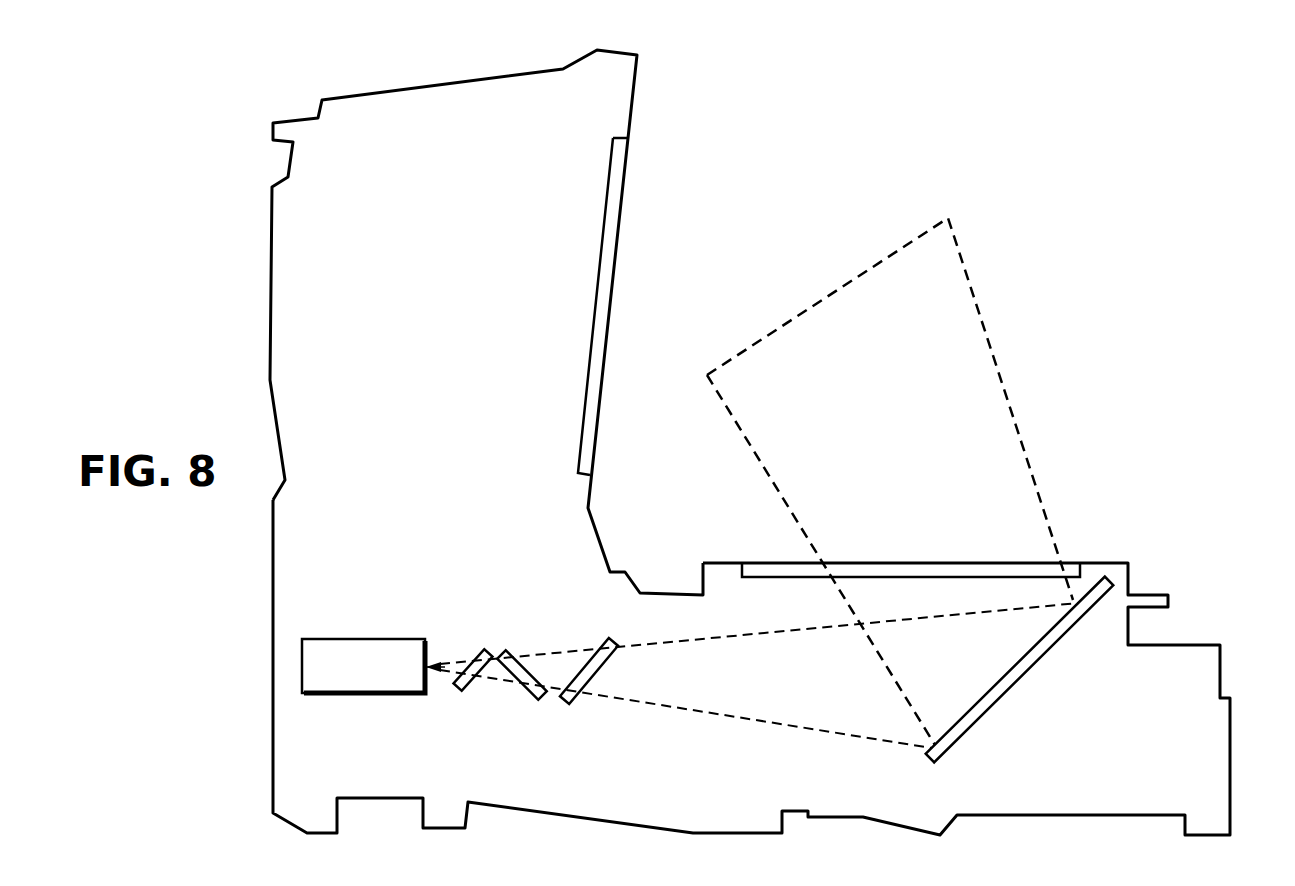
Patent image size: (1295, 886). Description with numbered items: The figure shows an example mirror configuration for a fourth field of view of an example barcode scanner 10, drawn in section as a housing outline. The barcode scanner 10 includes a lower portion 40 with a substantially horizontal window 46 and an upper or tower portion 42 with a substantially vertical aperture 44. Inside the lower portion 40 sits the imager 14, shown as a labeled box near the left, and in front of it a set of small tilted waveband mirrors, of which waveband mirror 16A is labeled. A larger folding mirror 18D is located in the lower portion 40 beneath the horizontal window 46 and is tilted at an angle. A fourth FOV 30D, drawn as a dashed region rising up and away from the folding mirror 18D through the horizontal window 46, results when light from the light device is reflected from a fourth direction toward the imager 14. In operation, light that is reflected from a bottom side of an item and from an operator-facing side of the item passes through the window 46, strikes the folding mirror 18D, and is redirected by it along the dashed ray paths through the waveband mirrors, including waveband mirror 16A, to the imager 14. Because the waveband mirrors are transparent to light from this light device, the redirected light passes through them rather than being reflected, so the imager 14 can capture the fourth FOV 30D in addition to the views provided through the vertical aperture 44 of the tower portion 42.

The barcode scanner 10 is at (1155, 52).
The imager 14 is at (363, 693).
The waveband mirror 16A is at (600, 673).
The folding mirror 18D is at (1020, 683).
The fourth field of view 30D is at (990, 343).
The lower portion 40 is at (272, 637).
The upper or tower portion 42 is at (270, 293).
The vertical aperture 44 is at (630, 158).
The horizontal window 46 is at (1075, 563).